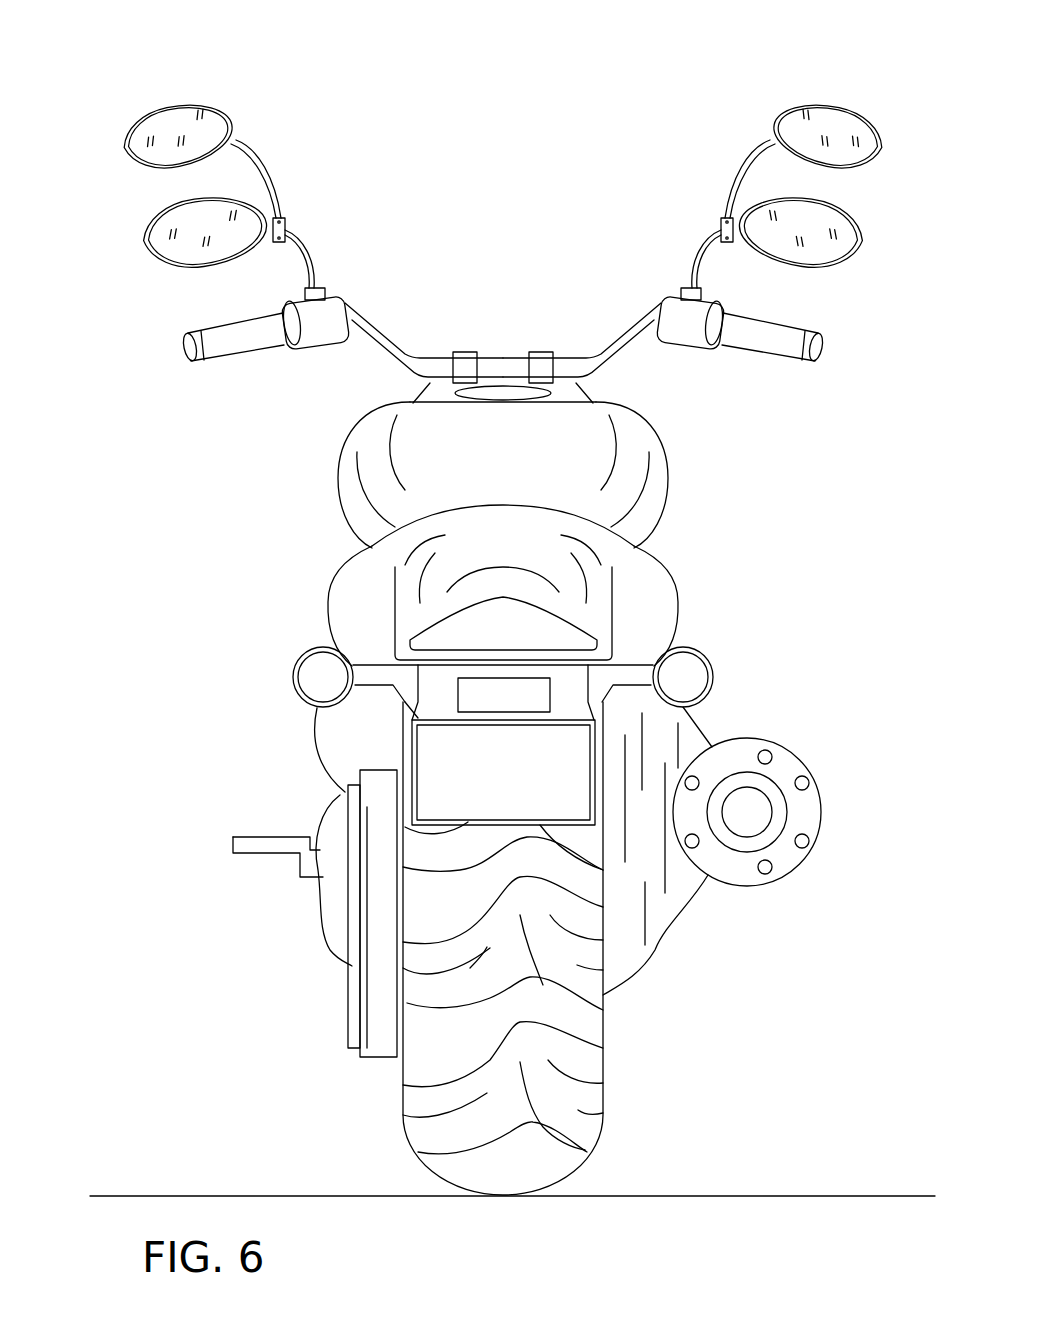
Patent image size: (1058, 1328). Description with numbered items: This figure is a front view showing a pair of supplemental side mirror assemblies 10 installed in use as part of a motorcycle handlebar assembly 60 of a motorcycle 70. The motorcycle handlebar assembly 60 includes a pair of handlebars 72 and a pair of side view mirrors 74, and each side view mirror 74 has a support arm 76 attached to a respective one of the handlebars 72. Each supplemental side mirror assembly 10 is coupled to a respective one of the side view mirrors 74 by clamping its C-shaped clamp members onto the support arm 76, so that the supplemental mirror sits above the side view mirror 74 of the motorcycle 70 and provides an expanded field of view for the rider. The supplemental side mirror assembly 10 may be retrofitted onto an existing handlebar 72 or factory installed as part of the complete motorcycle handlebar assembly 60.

The supplemental side mirror assembly 10 is at (258, 124).
The motorcycle handlebar assembly 60 is at (503, 186).
The motorcycle 70 is at (653, 487).
The handlebar 72 is at (382, 330).
The side view mirror 74 is at (140, 192).
The support arm 76 is at (308, 243).